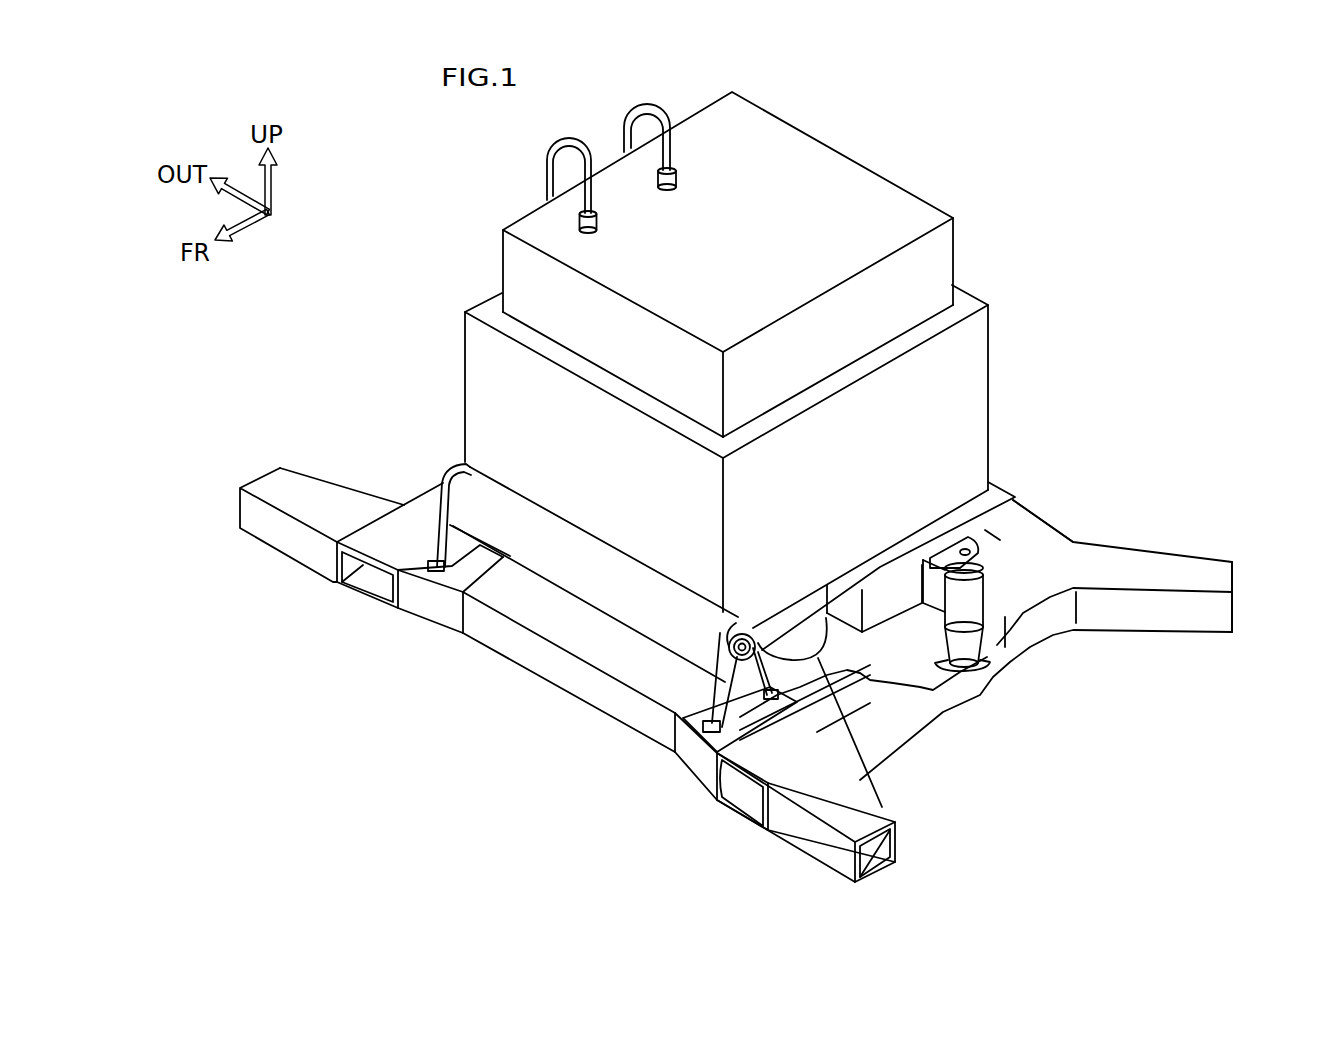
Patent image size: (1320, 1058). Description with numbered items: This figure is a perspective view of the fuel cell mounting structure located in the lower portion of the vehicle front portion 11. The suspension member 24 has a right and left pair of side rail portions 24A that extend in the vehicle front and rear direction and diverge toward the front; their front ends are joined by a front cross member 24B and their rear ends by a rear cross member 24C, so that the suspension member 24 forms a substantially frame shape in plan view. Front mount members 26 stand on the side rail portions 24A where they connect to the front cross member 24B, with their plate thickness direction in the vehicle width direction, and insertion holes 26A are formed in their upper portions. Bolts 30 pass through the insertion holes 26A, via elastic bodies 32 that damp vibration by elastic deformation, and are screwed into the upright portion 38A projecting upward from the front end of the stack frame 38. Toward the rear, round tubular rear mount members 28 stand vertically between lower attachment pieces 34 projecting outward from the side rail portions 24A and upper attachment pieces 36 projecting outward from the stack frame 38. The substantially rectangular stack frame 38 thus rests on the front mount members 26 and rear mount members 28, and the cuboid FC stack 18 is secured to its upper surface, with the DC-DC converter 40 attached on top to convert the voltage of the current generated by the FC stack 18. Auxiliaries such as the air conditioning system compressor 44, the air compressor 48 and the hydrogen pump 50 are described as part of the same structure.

The vehicle front portion 11 is at (1000, 210).
The FC stack 18 is at (990, 357).
The suspension member 24 is at (1050, 518).
The side rail portions 24A is at (967, 688).
The front cross member 24B is at (518, 676).
The rear cross member 24C is at (1046, 496).
The front mount members 26 is at (433, 487).
The insertion holes 26A is at (745, 632).
The rear mount members 28 is at (992, 600).
The bolts 30 is at (752, 638).
The elastic bodies 32 is at (447, 598).
The lower attachment pieces 34 is at (980, 667).
The upper attachment pieces 36 is at (990, 552).
The stack frame 38 is at (1019, 488).
The upright portion 38A is at (624, 553).
The DC-DC converter 40 is at (838, 134).
The air conditioning system compressor 44 is at (811, 658).
The air compressor 48 is at (892, 630).
The hydrogen pump 50 is at (994, 535).